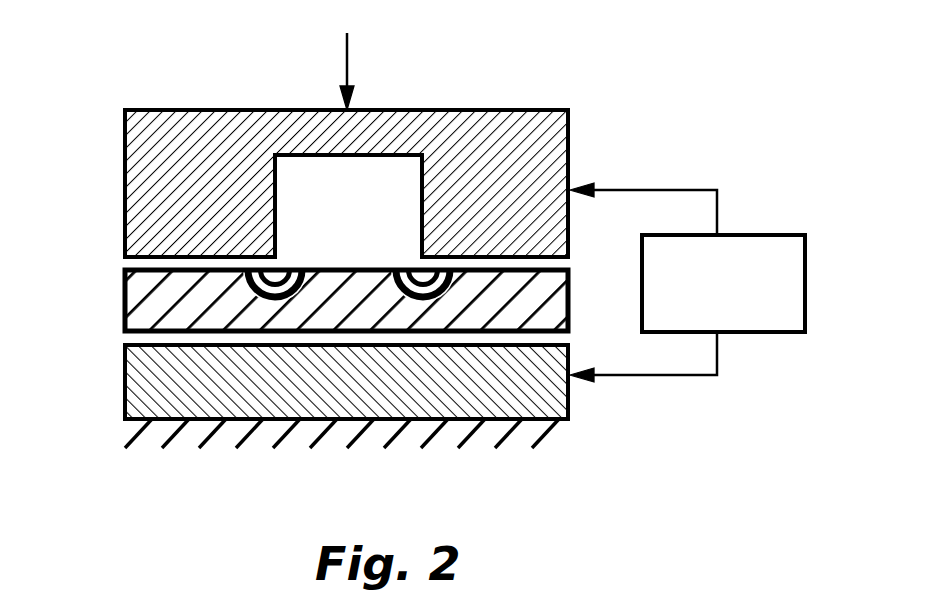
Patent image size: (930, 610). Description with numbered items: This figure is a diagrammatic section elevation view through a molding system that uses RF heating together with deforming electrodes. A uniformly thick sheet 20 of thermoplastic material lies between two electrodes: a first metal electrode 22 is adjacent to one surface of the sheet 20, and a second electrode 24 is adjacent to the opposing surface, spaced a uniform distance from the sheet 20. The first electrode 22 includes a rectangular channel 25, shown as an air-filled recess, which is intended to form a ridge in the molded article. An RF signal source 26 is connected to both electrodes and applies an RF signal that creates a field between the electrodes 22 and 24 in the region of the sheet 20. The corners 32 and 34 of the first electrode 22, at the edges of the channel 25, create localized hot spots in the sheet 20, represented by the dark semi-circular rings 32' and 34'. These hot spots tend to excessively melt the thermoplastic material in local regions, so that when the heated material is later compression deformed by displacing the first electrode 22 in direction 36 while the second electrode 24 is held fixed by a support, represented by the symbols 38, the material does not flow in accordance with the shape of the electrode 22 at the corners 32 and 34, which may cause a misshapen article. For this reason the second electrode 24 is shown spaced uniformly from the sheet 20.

The sheet 20 is at (291, 392).
The first metal electrode 22 is at (575, 110).
The second electrode 24 is at (125, 405).
The rectangular channel 25 is at (364, 248).
The RF signal source 26 is at (790, 238).
The corner 32 is at (477, 154).
The semi-circular ring 32' is at (421, 390).
The corner 34 is at (171, 206).
The semi-circular ring 34' is at (241, 392).
The direction 36 is at (348, 52).
The support symbols 38 is at (330, 440).